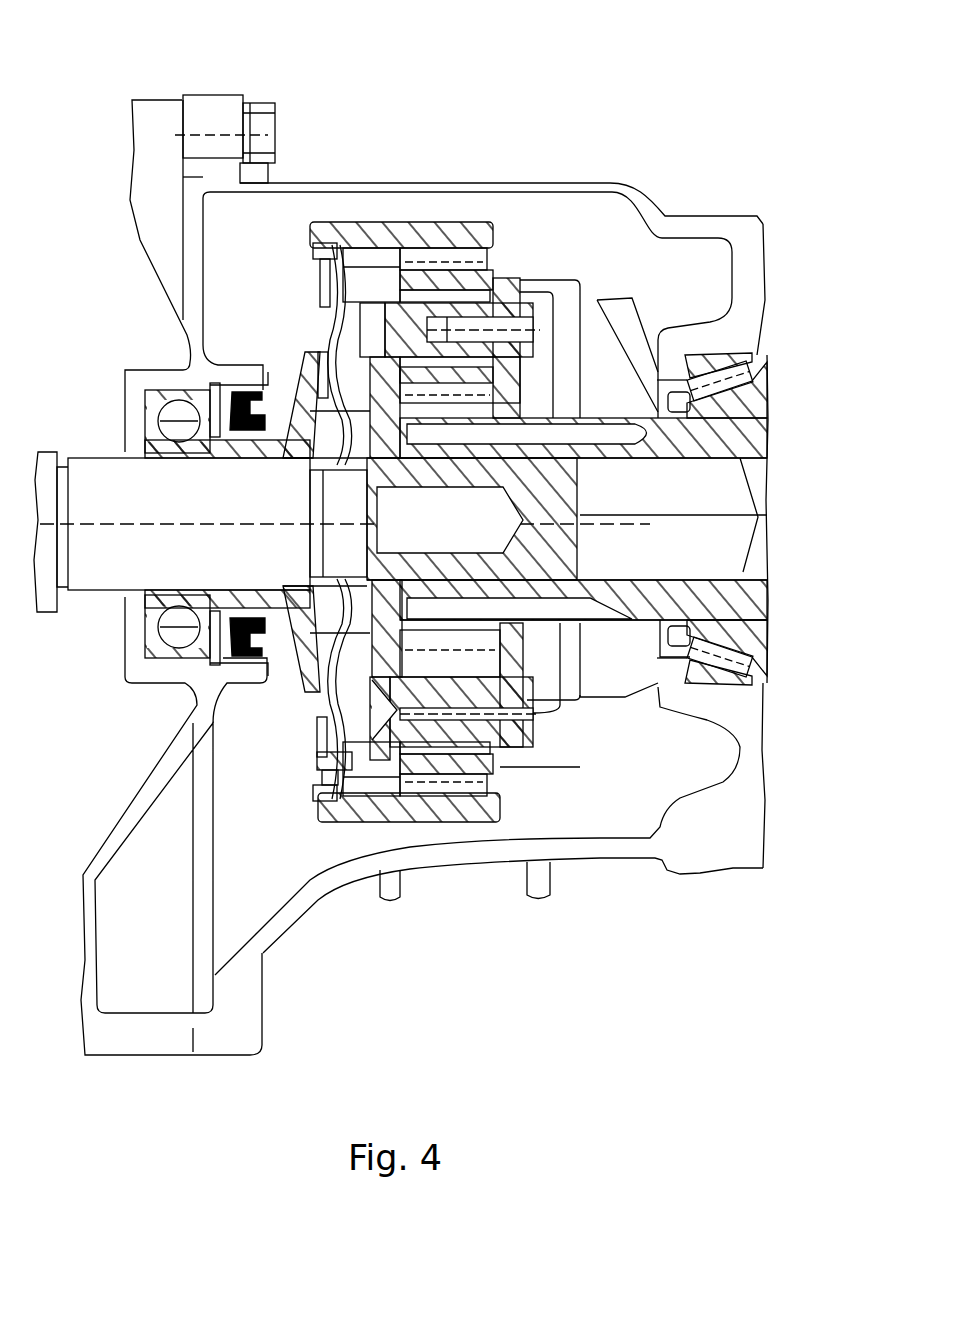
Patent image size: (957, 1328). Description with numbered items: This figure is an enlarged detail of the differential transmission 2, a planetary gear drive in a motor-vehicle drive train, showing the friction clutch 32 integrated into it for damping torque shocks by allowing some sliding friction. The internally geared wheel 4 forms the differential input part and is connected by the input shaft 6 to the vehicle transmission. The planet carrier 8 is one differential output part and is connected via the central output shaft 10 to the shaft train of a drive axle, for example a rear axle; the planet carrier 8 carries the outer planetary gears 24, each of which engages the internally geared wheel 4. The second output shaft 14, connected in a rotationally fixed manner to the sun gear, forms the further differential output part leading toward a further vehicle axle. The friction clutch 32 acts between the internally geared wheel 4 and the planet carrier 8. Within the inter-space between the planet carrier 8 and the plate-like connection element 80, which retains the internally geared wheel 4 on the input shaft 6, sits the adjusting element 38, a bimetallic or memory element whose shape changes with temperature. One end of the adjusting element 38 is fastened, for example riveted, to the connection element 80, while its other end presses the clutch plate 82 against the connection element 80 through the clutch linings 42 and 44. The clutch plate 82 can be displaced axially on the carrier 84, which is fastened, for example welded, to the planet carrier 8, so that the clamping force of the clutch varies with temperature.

The differential transmission 2 is at (467, 146).
The internally geared wheel 4 is at (470, 224).
The input shaft 6 is at (92, 470).
The planet carrier 8 is at (377, 260).
The output shaft 10 is at (742, 497).
The second output shaft 14 is at (768, 437).
The outer planetary gears 24 is at (495, 272).
The friction clutch 32 is at (289, 847).
The adjusting element 38 is at (318, 246).
The clutch lining 42 is at (320, 760).
The clutch lining 44 is at (317, 724).
The connection element 80 is at (316, 328).
The clutch plate 82 is at (315, 358).
The carrier 84 is at (318, 290).